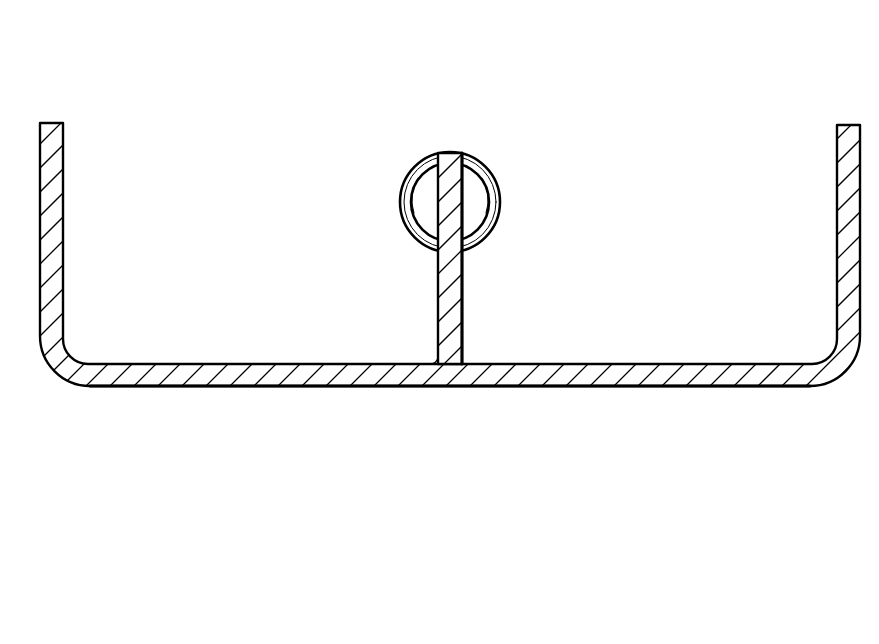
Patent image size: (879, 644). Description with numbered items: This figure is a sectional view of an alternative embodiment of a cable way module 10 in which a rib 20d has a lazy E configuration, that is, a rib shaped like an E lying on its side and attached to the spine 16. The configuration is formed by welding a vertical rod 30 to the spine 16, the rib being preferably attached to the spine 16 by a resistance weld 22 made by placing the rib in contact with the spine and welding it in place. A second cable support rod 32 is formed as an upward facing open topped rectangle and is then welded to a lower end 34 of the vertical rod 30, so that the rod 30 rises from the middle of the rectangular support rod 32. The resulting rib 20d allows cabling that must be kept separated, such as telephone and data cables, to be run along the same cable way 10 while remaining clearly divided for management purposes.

The cable way module 10 is at (245, 129).
The spine 16 is at (470, 156).
The rib 20d is at (651, 394).
The resistance weld 22 is at (486, 240).
The vertical rod 30 is at (463, 347).
The second cable support rod 32 is at (514, 388).
The lower end 34 is at (436, 357).